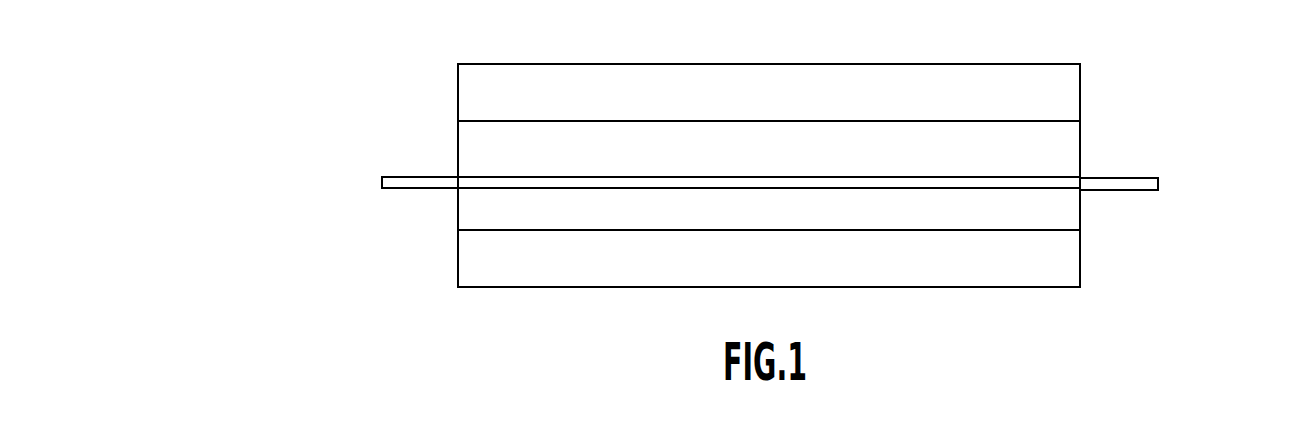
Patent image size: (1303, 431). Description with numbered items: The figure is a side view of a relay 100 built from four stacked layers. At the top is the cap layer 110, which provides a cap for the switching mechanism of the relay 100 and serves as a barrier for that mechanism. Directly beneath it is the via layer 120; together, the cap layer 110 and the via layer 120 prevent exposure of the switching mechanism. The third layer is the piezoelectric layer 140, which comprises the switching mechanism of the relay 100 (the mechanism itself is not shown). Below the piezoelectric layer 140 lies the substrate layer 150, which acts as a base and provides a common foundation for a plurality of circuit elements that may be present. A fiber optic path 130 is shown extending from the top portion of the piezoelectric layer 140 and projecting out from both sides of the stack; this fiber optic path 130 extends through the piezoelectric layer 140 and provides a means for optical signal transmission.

The relay 100 is at (424, 254).
The cap layer 110 is at (1080, 92).
The via layer 120 is at (458, 148).
The fiber optic path 130 is at (382, 180).
The piezoelectric layer 140 is at (458, 212).
The substrate layer 150 is at (1080, 262).